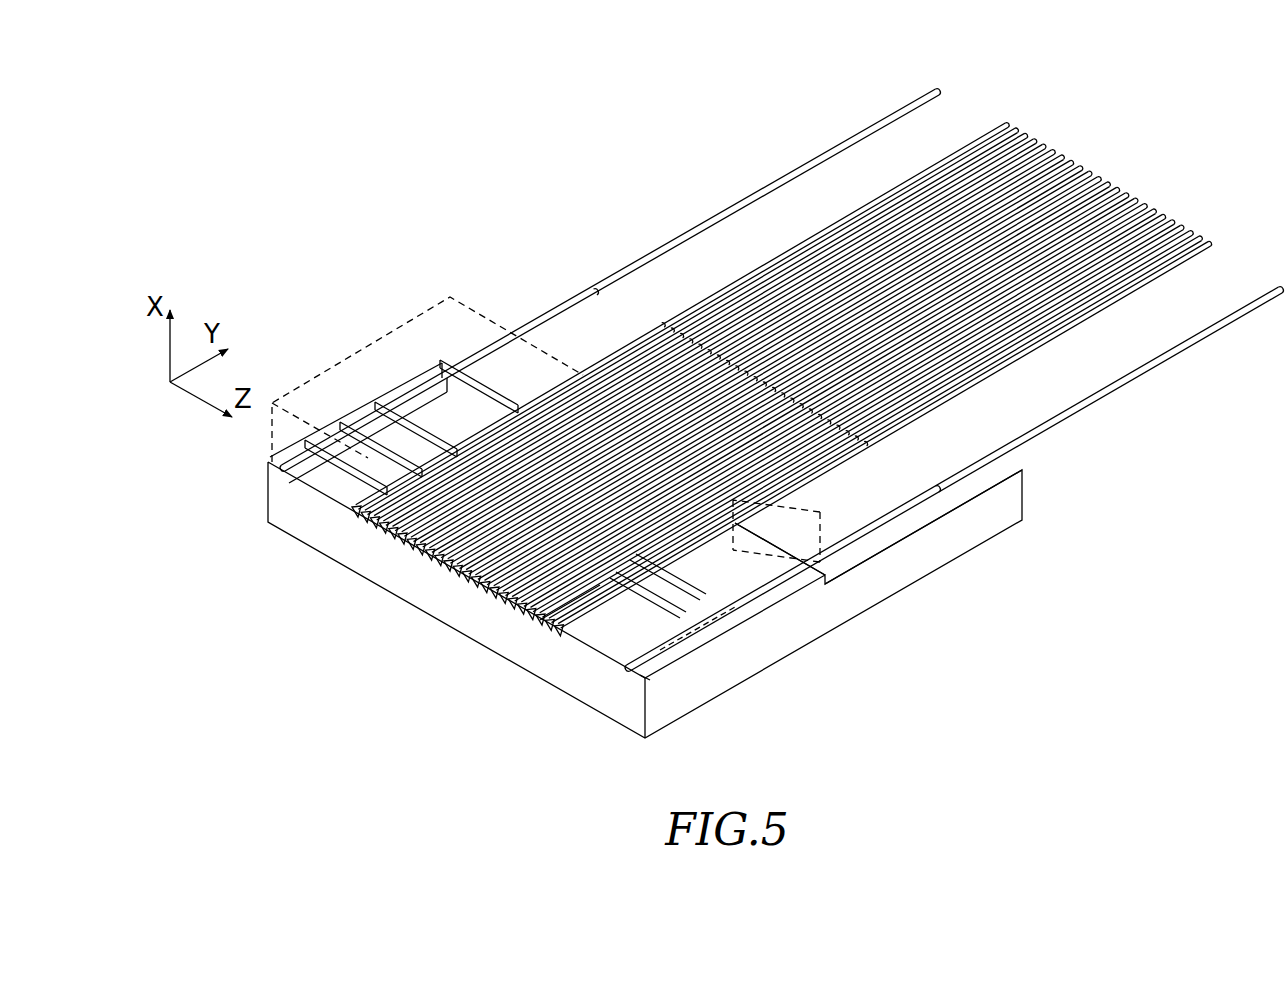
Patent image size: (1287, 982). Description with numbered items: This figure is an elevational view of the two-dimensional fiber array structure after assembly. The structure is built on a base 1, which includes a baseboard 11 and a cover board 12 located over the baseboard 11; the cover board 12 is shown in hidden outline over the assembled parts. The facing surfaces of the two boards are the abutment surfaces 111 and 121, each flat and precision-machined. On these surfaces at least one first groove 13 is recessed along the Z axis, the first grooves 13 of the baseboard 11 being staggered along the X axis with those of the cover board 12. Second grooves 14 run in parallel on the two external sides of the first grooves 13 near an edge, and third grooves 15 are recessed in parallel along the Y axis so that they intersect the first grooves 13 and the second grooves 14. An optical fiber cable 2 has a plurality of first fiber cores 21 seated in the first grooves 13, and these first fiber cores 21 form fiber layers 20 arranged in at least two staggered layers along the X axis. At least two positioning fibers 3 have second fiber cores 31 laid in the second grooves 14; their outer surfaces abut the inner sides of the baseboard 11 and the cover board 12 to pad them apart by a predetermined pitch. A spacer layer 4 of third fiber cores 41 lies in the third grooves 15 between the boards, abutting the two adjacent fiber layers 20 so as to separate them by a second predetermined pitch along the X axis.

The base 1 is at (775, 532).
The baseboard 11 is at (920, 553).
The cover board 12 is at (797, 552).
The first groove 13 is at (560, 625).
The second groove 14 is at (638, 667).
The third groove 15 is at (688, 652).
The abutment surface 111 is at (762, 600).
The abutment surface 121 is at (723, 627).
The optical fiber cable 2 is at (782, 458).
The fiber layer 20 is at (408, 553).
The first fiber core 21 is at (503, 590).
The positioning fiber 3 is at (579, 342).
The second fiber core 31 is at (579, 296).
The spacer layer 4 is at (399, 532).
The third fiber core 41 is at (360, 476).